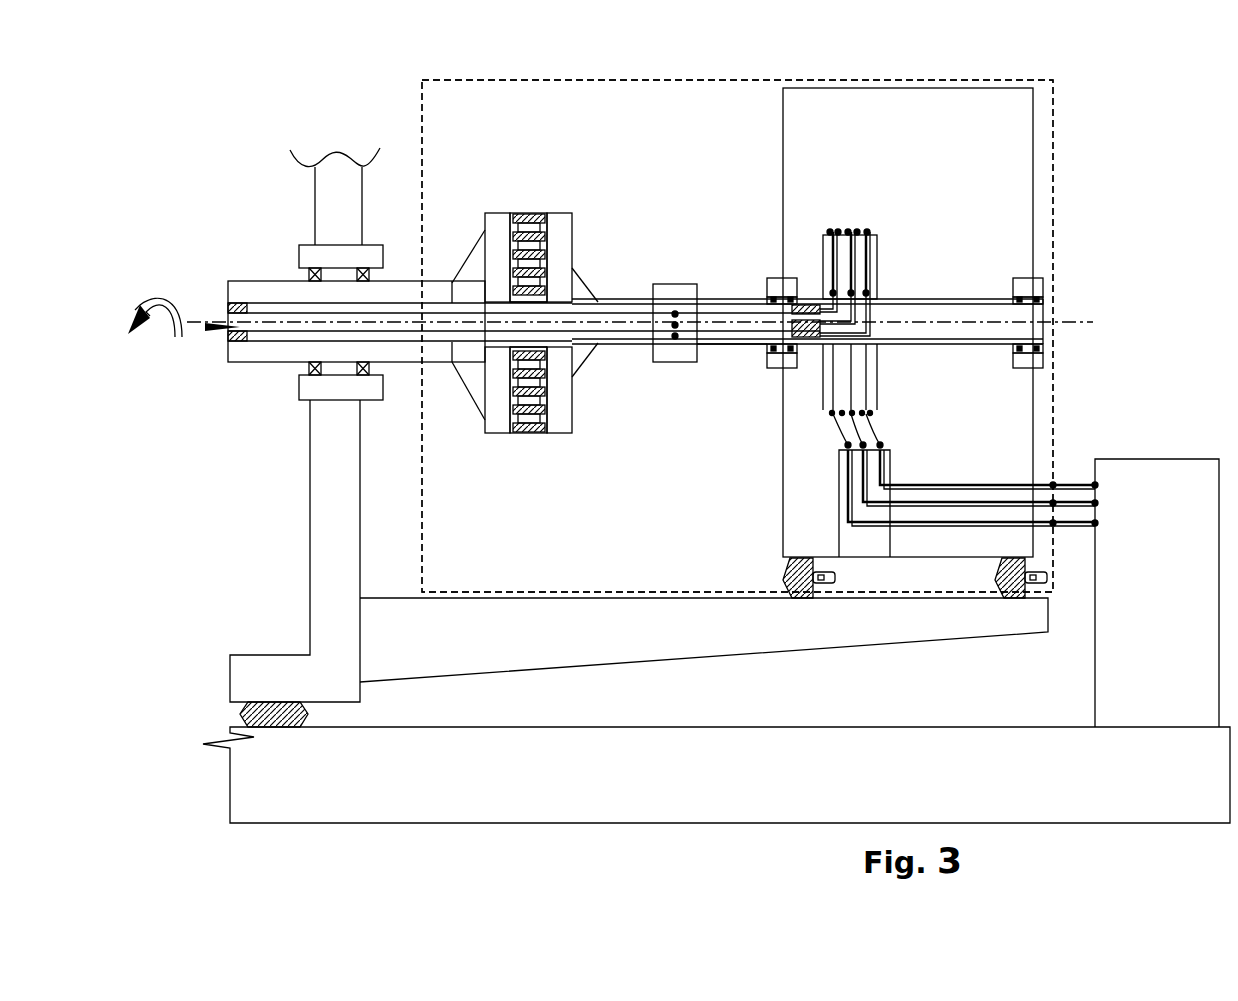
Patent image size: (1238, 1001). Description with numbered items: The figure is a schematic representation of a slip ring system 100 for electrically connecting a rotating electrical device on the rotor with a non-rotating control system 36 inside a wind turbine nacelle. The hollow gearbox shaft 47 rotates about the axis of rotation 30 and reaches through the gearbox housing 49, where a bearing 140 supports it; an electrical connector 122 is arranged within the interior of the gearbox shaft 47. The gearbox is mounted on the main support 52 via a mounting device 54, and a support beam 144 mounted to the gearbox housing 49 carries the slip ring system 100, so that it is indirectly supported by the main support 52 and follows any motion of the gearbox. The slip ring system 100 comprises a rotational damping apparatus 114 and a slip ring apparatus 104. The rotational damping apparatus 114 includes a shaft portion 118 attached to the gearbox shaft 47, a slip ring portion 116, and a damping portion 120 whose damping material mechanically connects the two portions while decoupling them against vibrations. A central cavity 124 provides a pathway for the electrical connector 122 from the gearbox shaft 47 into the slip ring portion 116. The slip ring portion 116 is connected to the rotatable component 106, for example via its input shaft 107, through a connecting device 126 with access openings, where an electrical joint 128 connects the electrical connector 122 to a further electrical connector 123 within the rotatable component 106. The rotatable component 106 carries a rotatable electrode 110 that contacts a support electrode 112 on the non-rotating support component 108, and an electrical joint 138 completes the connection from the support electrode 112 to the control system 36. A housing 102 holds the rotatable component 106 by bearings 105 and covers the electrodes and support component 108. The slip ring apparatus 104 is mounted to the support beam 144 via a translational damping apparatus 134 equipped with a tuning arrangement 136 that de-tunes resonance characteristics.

The axis of rotation 30 is at (196, 328).
The control system 36 is at (1170, 610).
The gearbox shaft 47 is at (283, 355).
The gearbox housing 49 is at (346, 559).
The main support 52 is at (717, 789).
The mounting device 54 is at (248, 721).
The slip ring system 100 is at (1058, 133).
The housing 102 is at (765, 336).
The slip ring apparatus 104 is at (930, 167).
The bearings 105 is at (1035, 360).
The rotatable component 106 is at (797, 260).
The input shaft 107 is at (740, 346).
The support component 108 is at (830, 476).
The rotatable electrode 110 is at (828, 414).
The support electrode 112 is at (838, 435).
The rotational damping apparatus 114 is at (533, 190).
The slip ring portion 116 is at (588, 413).
The shaft portion 118 is at (459, 432).
The damping portion 120 is at (527, 458).
The electrical connector 122 is at (283, 302).
The electrical connector 123 is at (753, 314).
The central cavity 124 is at (535, 305).
The connecting device 126 is at (666, 362).
The electrical joint 128 is at (662, 340).
The translational damping apparatus 134 is at (803, 598).
The tuning arrangement 136 is at (825, 584).
The electrical joint 138 is at (1053, 483).
The bearing 140 is at (307, 400).
The support beam 144 is at (658, 644).